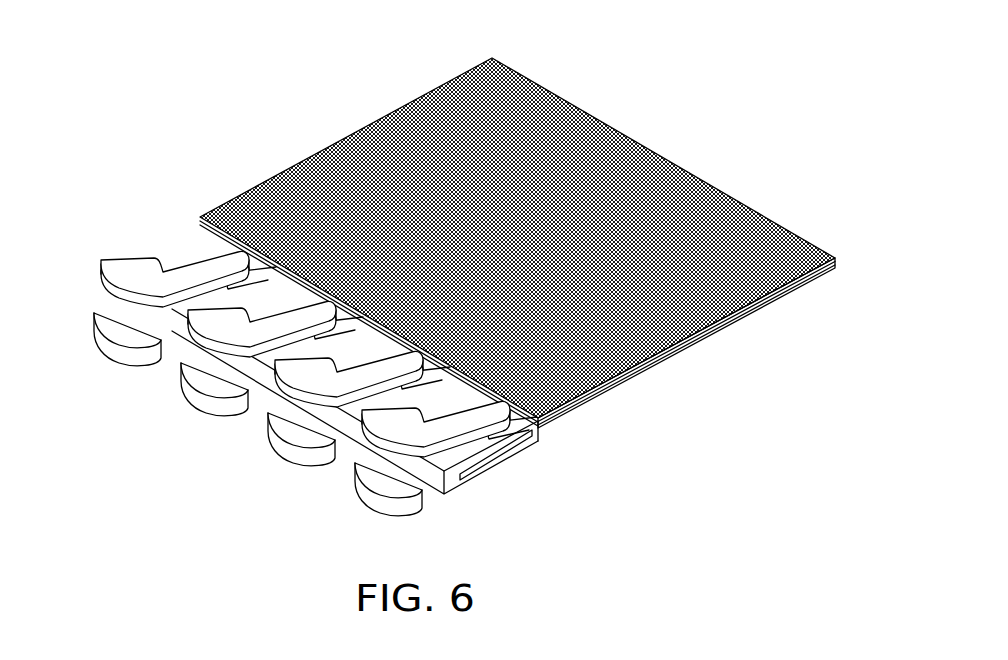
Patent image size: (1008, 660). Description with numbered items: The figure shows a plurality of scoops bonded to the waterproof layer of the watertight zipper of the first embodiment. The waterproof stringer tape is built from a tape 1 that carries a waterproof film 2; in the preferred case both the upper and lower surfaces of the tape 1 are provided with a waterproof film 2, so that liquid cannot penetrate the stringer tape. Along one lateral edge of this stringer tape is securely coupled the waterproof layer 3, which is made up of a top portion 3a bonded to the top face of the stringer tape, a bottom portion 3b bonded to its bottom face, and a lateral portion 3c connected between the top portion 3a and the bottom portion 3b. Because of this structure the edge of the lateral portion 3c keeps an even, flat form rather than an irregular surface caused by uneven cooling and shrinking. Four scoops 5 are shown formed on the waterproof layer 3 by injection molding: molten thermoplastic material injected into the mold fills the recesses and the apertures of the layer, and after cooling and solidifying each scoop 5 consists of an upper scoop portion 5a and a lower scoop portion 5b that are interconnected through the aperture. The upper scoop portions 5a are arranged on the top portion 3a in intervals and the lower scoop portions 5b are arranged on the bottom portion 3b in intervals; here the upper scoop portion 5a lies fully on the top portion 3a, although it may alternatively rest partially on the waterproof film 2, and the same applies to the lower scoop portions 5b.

The tape 1 is at (836, 264).
The waterproof film 2 is at (763, 228).
The waterproof layer 3 is at (403, 417).
The top portion 3a is at (538, 428).
The bottom portion 3b is at (528, 462).
The lateral portion 3c is at (450, 477).
The scoop 5 is at (315, 399).
The upper scoop portion 5a is at (378, 447).
The lower scoop portion 5b is at (373, 497).